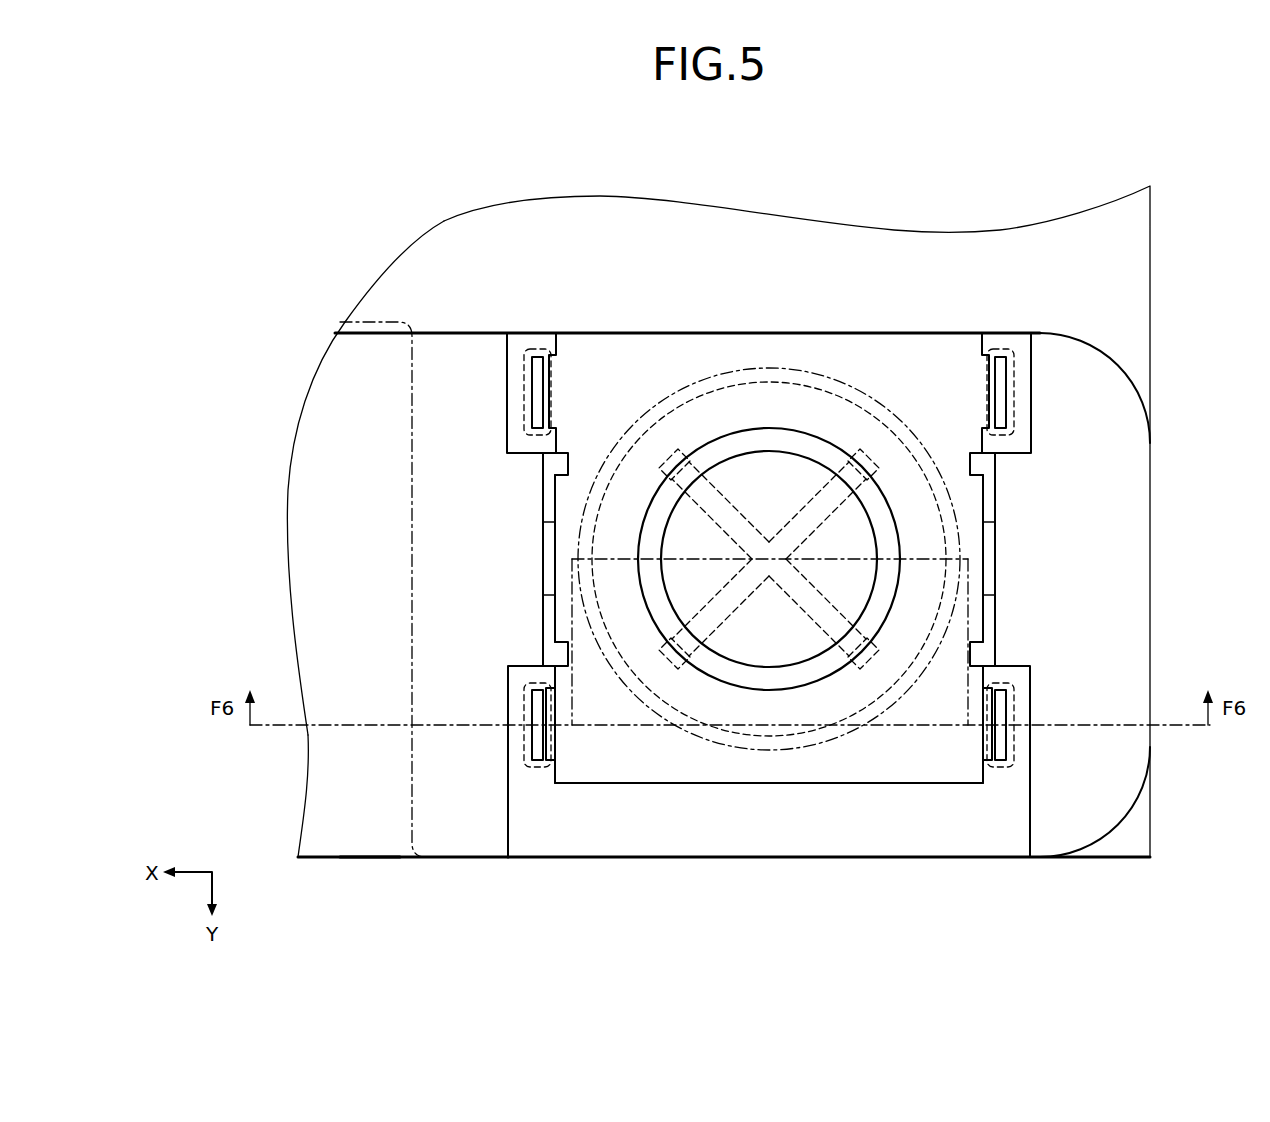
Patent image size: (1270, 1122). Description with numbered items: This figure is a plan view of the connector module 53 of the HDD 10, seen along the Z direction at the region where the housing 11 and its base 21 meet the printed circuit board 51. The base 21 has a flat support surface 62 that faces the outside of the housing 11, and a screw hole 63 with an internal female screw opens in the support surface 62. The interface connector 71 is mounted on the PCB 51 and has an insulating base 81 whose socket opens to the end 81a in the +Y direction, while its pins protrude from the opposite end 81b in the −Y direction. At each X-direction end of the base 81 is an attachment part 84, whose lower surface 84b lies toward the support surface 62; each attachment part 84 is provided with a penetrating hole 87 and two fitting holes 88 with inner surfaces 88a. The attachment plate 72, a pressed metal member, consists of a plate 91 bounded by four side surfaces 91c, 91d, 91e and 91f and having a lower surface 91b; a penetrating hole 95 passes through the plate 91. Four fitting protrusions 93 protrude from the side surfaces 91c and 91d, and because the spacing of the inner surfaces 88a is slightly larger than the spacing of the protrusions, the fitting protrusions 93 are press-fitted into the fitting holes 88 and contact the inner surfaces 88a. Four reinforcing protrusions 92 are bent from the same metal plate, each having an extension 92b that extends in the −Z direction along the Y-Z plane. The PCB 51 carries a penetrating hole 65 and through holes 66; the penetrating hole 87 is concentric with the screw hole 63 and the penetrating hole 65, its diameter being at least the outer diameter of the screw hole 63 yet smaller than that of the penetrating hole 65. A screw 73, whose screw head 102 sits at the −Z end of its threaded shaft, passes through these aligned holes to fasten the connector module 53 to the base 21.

The HDD 10 is at (298, 138).
The housing 11 is at (1160, 223).
The base 21 is at (1149, 860).
The support surface 62 is at (838, 908).
The printed circuit board 51 is at (412, 775).
The connector module 53 is at (367, 864).
The screw hole 63 is at (792, 660).
The penetrating hole 65 is at (685, 743).
The through hole 66 is at (540, 345).
The interface connector 71 is at (405, 857).
The attachment plate 72 is at (866, 365).
The side surface 91f is at (687, 249).
The screw 73 is at (838, 730).
The screw head 102 is at (769, 664).
The base 81 is at (315, 381).
The end 81a is at (317, 857).
The end 81b is at (350, 333).
The attachment part 84 is at (1115, 418).
The lower surface 84b is at (930, 847).
The penetrating hole 87 is at (739, 690).
The penetrating hole 95 is at (769, 694).
The fitting hole 88 is at (536, 567).
The inner surface 88a is at (545, 541).
The plate 91 is at (622, 365).
The lower surface 91b is at (738, 546).
The side surface 91c is at (565, 677).
The side surface 91d is at (993, 677).
The side surface 91e is at (598, 783).
The reinforcing protrusion 92 is at (536, 372).
The extension 92b is at (852, 546).
The fitting protrusion 93 is at (546, 501).